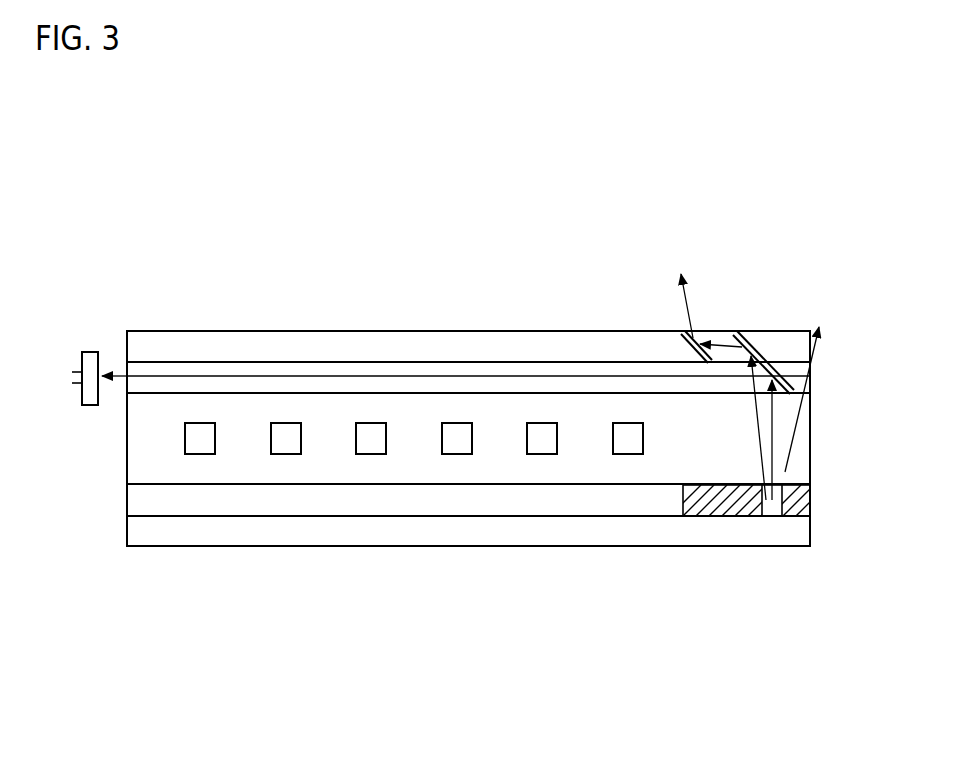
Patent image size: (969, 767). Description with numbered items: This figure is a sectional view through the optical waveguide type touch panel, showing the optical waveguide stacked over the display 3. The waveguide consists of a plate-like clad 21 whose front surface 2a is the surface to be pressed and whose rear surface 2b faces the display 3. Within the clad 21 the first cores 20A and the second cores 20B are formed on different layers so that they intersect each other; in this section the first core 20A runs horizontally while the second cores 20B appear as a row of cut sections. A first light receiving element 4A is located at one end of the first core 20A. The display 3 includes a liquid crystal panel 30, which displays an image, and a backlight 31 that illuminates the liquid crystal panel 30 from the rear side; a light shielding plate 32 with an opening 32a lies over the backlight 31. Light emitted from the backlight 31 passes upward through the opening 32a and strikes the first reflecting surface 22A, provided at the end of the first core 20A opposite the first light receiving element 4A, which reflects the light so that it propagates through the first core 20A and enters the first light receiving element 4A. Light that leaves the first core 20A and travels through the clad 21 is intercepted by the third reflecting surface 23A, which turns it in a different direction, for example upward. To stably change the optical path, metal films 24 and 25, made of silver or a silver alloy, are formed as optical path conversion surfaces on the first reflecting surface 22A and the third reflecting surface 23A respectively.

The display 3 is at (483, 547).
The surface 2a is at (178, 331).
The rear surface 2b is at (147, 487).
The first light receiving element 4A is at (90, 352).
The first core 20A is at (236, 375).
The second core 20B is at (278, 447).
The clad 21 is at (455, 408).
The first reflecting surface 22A is at (788, 398).
The third reflecting surface 23A is at (690, 333).
The metal film 24 is at (756, 352).
The metal film 25 is at (683, 336).
The liquid crystal panel 30 is at (637, 508).
The backlight 31 is at (607, 537).
The light shielding plate 32 is at (755, 507).
The opening 32a is at (770, 517).